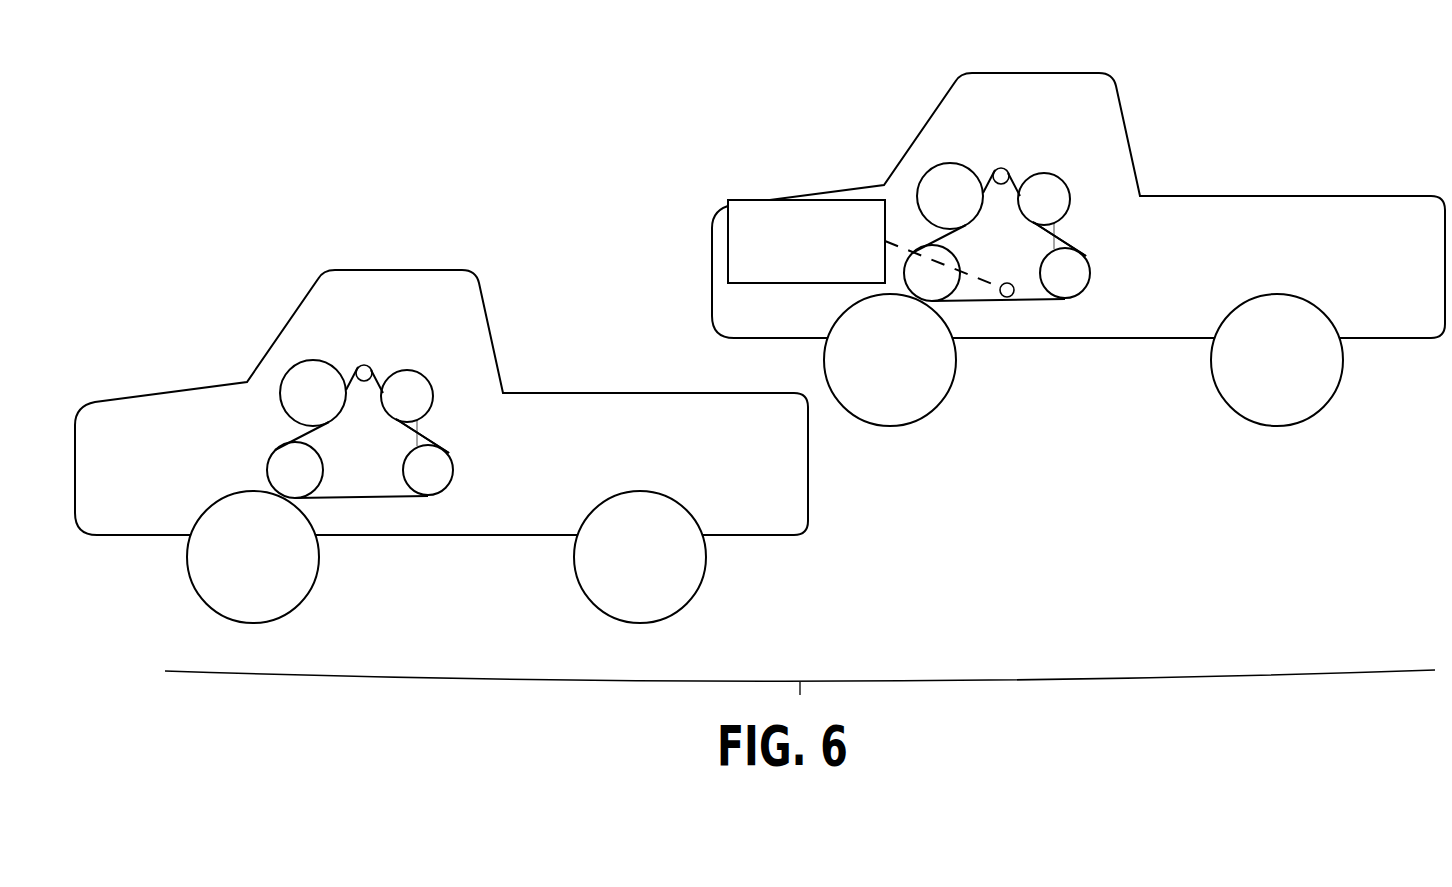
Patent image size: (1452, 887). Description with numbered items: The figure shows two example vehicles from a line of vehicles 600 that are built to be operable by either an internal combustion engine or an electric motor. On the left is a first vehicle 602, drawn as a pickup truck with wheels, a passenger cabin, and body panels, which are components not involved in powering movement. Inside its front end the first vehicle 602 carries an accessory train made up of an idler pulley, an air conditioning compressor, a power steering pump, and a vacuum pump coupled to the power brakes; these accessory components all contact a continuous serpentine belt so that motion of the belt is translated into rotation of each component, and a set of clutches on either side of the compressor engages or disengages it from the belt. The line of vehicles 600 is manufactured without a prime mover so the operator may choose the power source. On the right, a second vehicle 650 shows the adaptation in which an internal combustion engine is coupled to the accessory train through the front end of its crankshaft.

The line of vehicles 600 is at (234, 130).
The first vehicle 602 is at (262, 240).
The second vehicle 650 is at (898, 43).